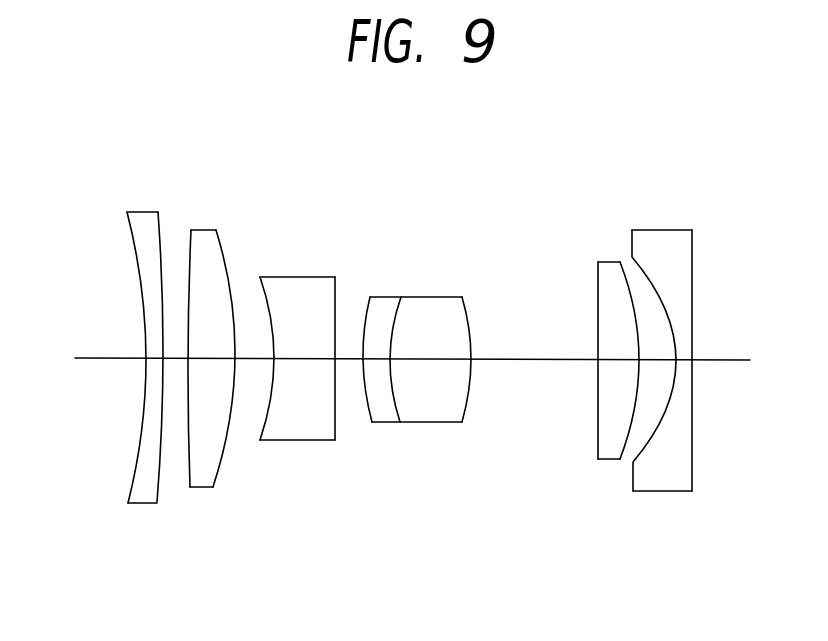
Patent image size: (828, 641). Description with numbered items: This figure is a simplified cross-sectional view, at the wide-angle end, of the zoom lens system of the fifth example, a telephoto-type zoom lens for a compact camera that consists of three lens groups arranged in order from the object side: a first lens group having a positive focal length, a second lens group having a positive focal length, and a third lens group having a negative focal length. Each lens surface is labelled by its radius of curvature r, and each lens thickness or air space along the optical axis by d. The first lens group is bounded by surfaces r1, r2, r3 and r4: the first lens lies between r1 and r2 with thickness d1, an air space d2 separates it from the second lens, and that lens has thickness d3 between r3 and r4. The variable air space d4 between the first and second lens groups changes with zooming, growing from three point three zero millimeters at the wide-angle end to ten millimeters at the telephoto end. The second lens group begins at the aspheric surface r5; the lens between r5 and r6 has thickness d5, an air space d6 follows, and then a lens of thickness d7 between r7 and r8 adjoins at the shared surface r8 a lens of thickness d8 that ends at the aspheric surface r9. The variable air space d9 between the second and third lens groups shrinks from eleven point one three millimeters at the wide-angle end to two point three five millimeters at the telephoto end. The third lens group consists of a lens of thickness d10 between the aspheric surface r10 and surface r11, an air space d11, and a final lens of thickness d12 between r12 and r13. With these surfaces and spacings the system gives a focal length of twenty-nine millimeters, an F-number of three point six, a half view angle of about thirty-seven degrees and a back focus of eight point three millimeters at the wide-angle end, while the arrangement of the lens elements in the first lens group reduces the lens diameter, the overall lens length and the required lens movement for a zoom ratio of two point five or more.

The radius of curvature of first lens surface r1 is at (139, 303).
The radius of curvature of second lens surface r2 is at (169, 319).
The radius of curvature of third lens surface r3 is at (197, 295).
The radius of curvature of fourth lens surface r4 is at (226, 311).
The radius of curvature of fifth lens surface r5 is at (269, 272).
The radius of curvature of sixth lens surface r6 is at (329, 288).
The radius of curvature of seventh lens surface r7 is at (360, 263).
The radius of curvature of eighth lens surface r8 is at (388, 279).
The radius of curvature of ninth lens surface r9 is at (465, 263).
The radius of curvature of tenth lens surface r10 is at (602, 298).
The radius of curvature of eleventh lens surface r11 is at (636, 283).
The radius of curvature of twelfth lens surface r12 is at (661, 314).
The radius of curvature of thirteenth lens surface r13 is at (704, 299).
The thickness of first lens d1 is at (154, 359).
The air space between first and second lenses d2 is at (175, 359).
The thickness of second lens d3 is at (212, 359).
The variable air space between first and second lens groups d4 is at (254, 359).
The thickness of third lens d5 is at (304, 359).
The air space within second lens group d6 is at (348, 359).
The thickness of fourth lens d7 is at (378, 359).
The thickness of fifth lens d8 is at (429, 359).
The variable air space between second and third lens groups d9 is at (537, 359).
The thickness of sixth lens d10 is at (621, 360).
The air space within third lens group d11 is at (657, 360).
The thickness of seventh lens d12 is at (685, 360).